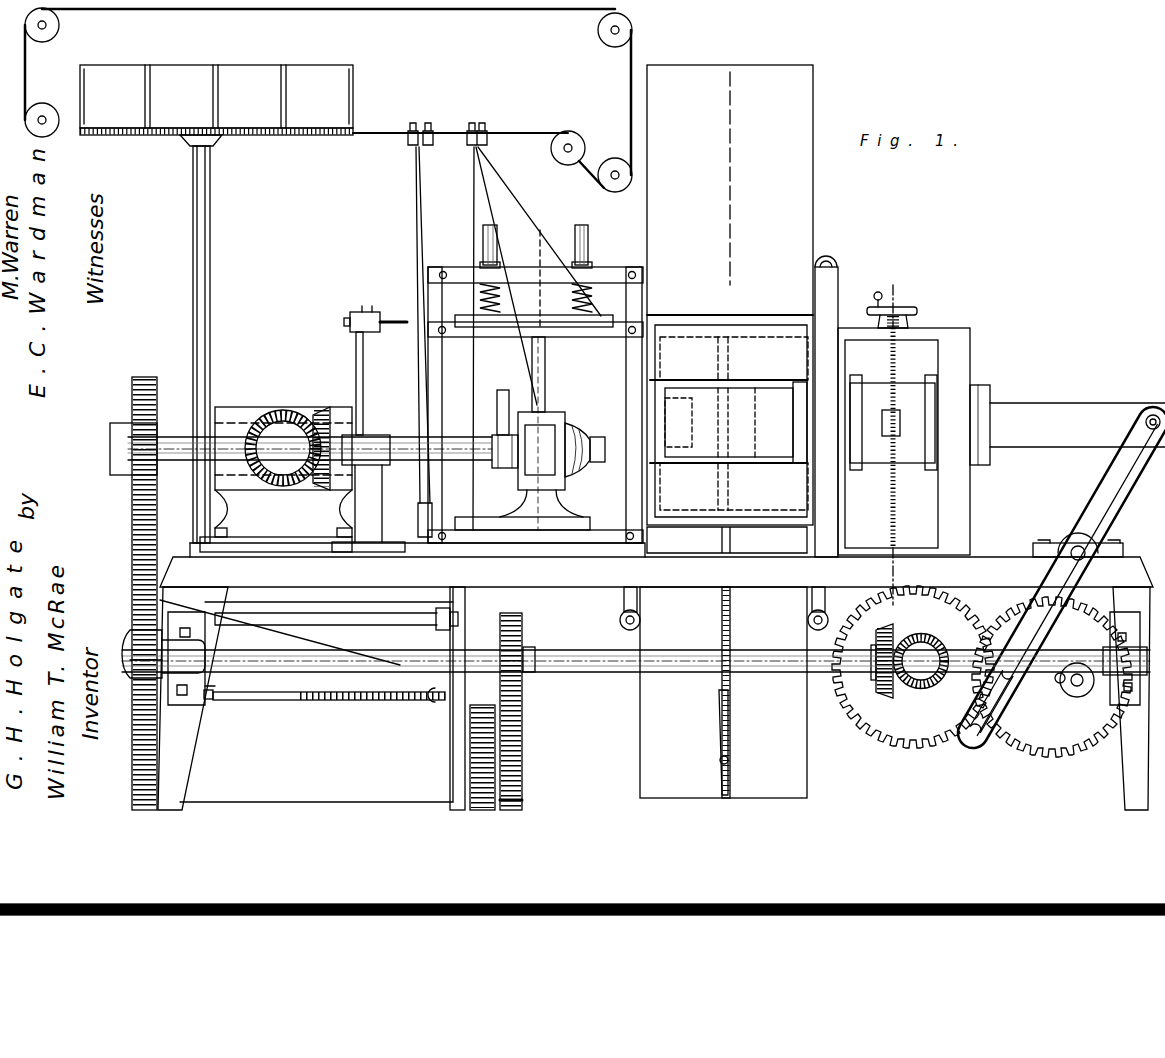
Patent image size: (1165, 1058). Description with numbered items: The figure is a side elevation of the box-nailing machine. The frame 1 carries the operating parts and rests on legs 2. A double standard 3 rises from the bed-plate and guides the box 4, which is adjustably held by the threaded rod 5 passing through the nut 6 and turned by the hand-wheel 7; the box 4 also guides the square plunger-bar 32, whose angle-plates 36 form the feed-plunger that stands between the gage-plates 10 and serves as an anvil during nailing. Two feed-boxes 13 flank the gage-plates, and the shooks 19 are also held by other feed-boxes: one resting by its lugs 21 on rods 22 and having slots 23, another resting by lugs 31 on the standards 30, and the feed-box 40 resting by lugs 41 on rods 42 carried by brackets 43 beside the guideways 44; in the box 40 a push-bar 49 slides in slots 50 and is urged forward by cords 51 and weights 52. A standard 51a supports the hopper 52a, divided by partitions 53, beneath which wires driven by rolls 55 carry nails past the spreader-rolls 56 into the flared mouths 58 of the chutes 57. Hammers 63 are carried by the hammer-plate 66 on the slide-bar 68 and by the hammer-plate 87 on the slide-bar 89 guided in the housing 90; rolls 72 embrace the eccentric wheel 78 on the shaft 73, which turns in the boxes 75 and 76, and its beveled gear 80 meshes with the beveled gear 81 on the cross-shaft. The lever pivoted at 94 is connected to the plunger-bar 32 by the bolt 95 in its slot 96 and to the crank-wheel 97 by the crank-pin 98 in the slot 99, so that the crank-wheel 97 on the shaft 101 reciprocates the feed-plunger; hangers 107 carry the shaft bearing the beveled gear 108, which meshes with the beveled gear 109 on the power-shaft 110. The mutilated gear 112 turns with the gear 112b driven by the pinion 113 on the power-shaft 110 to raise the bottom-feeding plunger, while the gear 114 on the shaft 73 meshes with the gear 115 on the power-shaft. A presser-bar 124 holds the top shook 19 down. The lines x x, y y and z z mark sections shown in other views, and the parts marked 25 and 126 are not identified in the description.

The frame 1 is at (165, 562).
The legs 2 is at (1130, 778).
The double standard 3 is at (968, 503).
The box 4 is at (905, 392).
The threaded rod 5 is at (890, 355).
The nut 6 is at (882, 436).
The hand-wheel 7 is at (920, 312).
The gage-plates 10 is at (728, 421).
The feed-boxes 13 is at (730, 309).
The shooks 19 is at (735, 616).
The lugs 21 is at (620, 618).
The rods 22 is at (825, 612).
The slots 23 is at (730, 770).
The box 25 is at (723, 692).
The standards 30 is at (830, 285).
The lugs 31 is at (835, 258).
The plunger-bar 32 is at (1035, 447).
The angle-plates 36 is at (734, 423).
The feed-box 40 is at (316, 694).
The lugs 41 is at (435, 612).
The rods 42 is at (332, 612).
The brackets 43 is at (467, 605).
The guideways 44 is at (450, 750).
The push-bar 49 is at (208, 700).
The slots 50 is at (396, 700).
The cords 51 is at (325, 700).
The standard 51a is at (212, 280).
The weights 52 is at (125, 634).
The hopper 52a is at (235, 66).
The partitions 53 is at (288, 66).
The rolls 55 is at (602, 198).
The spreader-rolls 56 is at (497, 114).
The chutes 57 is at (508, 190).
The flared mouths 58 is at (412, 148).
The hammers 63 is at (386, 330).
The hammer-plate 66 is at (565, 517).
The slide-bar 68 is at (541, 433).
The rolls 72 is at (500, 470).
The shaft 73 is at (411, 464).
The boxes 75 is at (585, 415).
The box 76 is at (370, 440).
The eccentric wheel 78 is at (503, 392).
The beveled gear 80 is at (320, 485).
The beveled gear 81 is at (276, 485).
The hammer-plate 87 is at (390, 312).
The slide-bar 89 is at (110, 460).
The housing 90 is at (240, 406).
The pivot 94 is at (1100, 552).
The bolt 95 is at (1152, 412).
The slot 96 is at (1106, 492).
The crank-wheel 97 is at (1075, 697).
The crank-pin 98 is at (1055, 679).
The slot 99 is at (975, 742).
The shaft 101 is at (1035, 742).
The hangers 107 is at (1100, 616).
The beveled gear 108 is at (915, 689).
The beveled gear 109 is at (876, 688).
The power-shaft 110 is at (790, 674).
The mutilated gear 112 is at (497, 748).
The gear 112b is at (522, 796).
The pinion 113 is at (525, 635).
The gear 114 is at (144, 376).
The gear 115 is at (130, 680).
The presser-bar 124 is at (592, 268).
The springs 126 is at (565, 296).
The section line x x is at (724, 431).
The section line y y is at (537, 269).
The section line z z is at (891, 438).